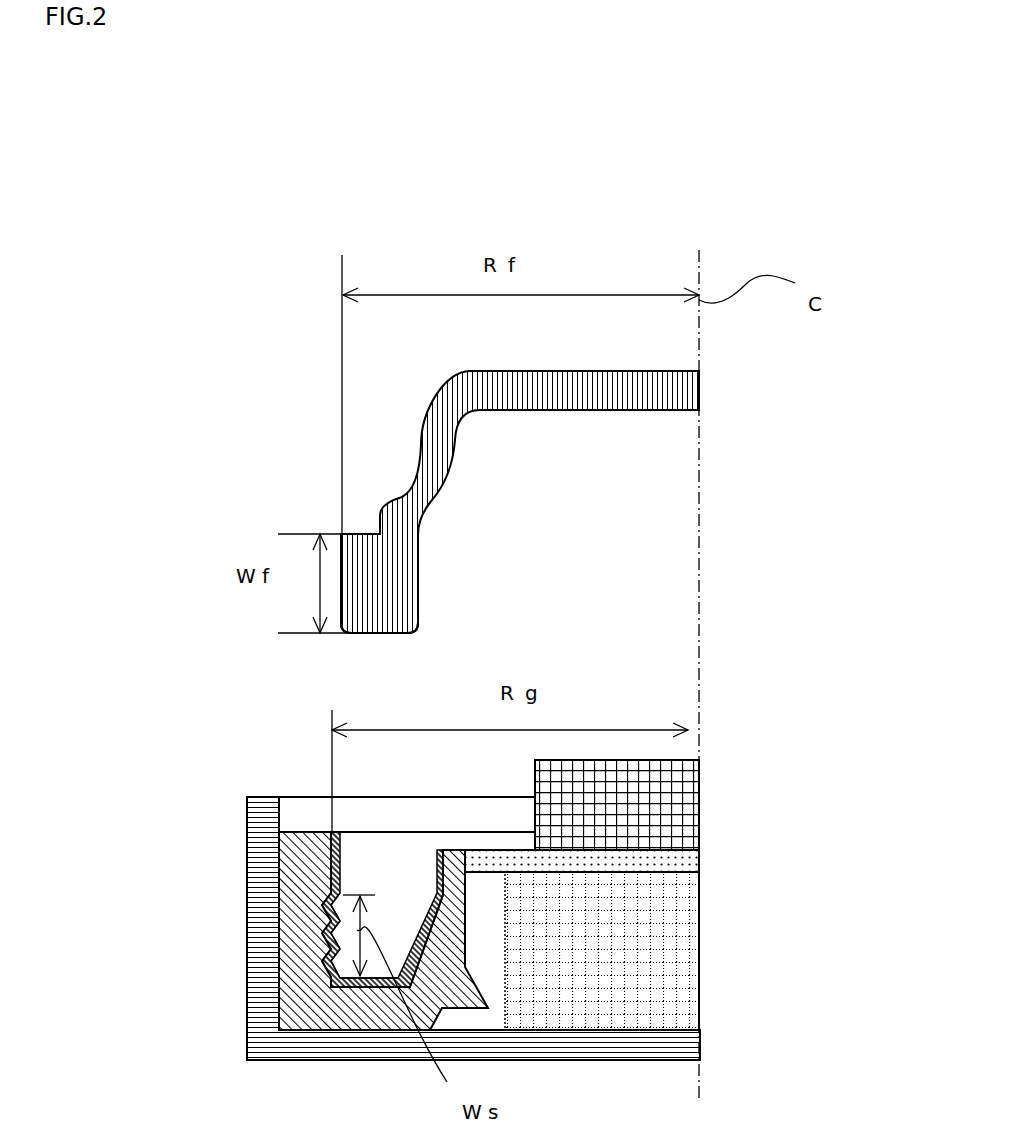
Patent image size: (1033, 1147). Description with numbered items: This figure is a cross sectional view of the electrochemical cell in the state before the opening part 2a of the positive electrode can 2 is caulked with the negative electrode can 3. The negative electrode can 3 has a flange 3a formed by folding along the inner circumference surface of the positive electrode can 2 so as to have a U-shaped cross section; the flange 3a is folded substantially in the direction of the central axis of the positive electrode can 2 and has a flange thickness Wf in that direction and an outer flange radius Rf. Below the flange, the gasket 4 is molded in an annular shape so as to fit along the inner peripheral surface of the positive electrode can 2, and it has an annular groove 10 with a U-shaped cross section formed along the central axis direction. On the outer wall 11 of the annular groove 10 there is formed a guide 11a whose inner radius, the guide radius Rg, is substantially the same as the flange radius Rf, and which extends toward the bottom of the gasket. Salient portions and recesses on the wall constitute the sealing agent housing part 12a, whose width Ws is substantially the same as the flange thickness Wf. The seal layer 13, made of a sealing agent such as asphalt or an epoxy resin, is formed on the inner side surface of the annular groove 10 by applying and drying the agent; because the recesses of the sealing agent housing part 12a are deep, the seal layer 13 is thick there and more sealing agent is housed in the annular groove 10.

The positive electrode can 2 is at (253, 950).
The opening part 2a is at (255, 817).
The negative electrode can 3 is at (450, 377).
The flange 3a is at (415, 607).
The gasket 4 is at (248, 857).
The annular groove 10 is at (412, 862).
The outer wall 11 is at (297, 837).
The guide 11a is at (318, 832).
The sealing agent housing part 12a is at (330, 920).
The seal layer 13 is at (343, 970).